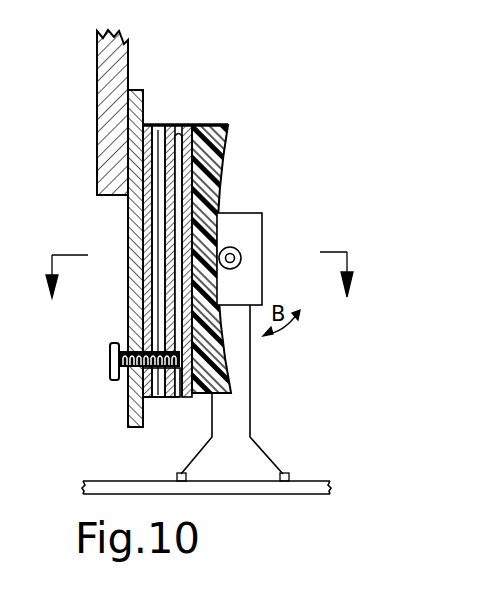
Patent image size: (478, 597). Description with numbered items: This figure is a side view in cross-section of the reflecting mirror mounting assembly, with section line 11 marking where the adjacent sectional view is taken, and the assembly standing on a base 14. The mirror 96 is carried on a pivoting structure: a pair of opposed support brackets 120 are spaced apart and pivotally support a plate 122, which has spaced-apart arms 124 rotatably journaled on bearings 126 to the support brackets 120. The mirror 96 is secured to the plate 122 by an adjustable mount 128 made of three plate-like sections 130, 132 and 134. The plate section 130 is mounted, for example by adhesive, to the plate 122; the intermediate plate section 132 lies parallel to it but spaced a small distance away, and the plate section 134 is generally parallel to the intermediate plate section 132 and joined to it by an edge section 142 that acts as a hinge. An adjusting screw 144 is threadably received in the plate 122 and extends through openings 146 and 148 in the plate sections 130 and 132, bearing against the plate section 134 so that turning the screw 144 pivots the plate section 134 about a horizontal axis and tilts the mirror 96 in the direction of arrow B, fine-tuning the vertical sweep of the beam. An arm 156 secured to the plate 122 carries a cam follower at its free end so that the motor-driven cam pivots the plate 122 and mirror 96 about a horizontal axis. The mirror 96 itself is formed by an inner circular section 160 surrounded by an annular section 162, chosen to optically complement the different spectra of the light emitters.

The base plate 14 is at (300, 482).
The mirror 96 is at (234, 161).
The support brackets 120 is at (235, 410).
The plate 122 is at (134, 317).
The arms 124 is at (236, 222).
The bearings 126 is at (241, 254).
The adjustable mount 128 is at (154, 120).
The plate section 130 is at (150, 213).
The intermediate plate section 132 is at (194, 120).
The plate section 134 is at (222, 351).
The edge section 142 is at (170, 120).
The adjusting screw 144 is at (110, 358).
The opening 146 is at (163, 400).
The opening 148 is at (181, 398).
The arm 156 is at (108, 92).
The inner circular section 160 is at (200, 267).
The annular section 162 is at (232, 128).
The section line 11- 11 is at (201, 277).